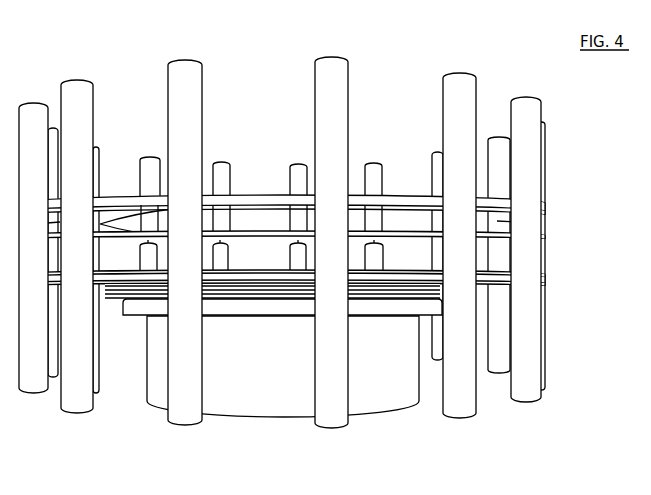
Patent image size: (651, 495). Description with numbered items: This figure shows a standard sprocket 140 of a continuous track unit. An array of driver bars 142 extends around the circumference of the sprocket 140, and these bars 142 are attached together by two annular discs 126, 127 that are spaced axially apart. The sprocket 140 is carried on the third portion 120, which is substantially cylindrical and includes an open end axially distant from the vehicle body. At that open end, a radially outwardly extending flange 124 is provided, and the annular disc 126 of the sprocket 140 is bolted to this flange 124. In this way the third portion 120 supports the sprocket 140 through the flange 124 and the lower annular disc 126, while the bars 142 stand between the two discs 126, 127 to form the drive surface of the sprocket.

The sprocket 140 is at (282, 240).
The driver bars 142 is at (83, 124).
The annular disc 127 is at (392, 198).
The annular disc 126 is at (250, 276).
The radially outwardly extending flange 124 is at (137, 307).
The third portion 120 is at (375, 380).